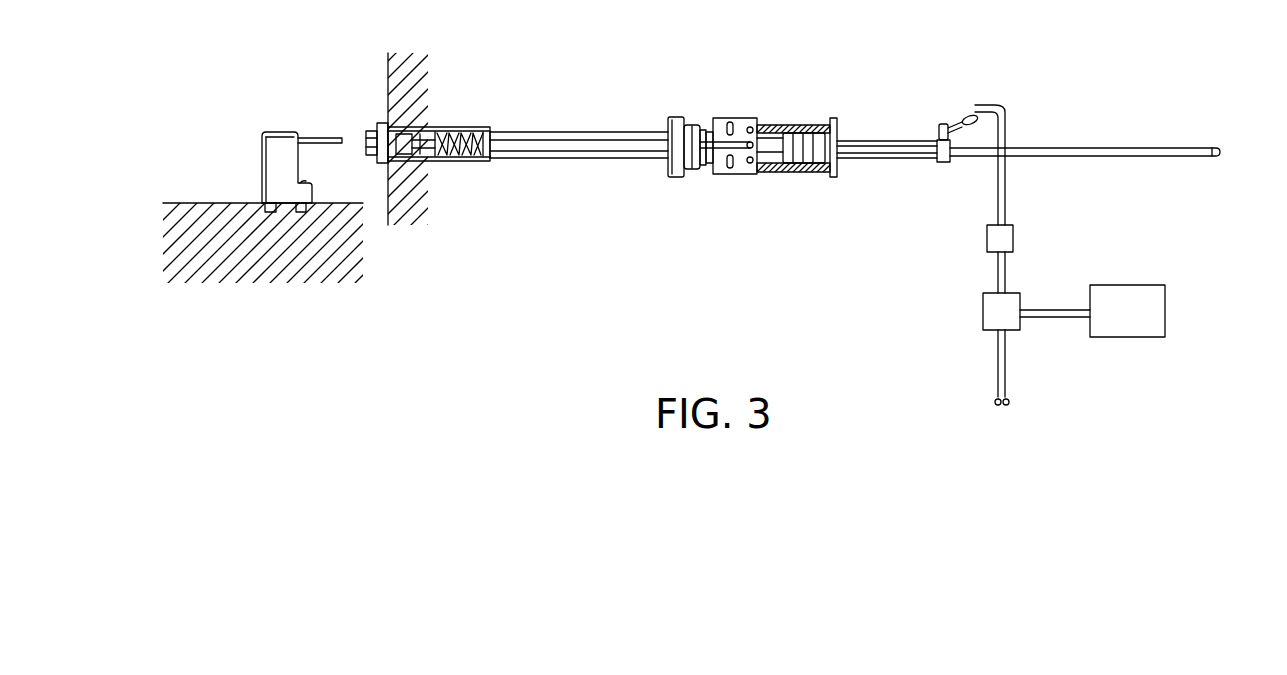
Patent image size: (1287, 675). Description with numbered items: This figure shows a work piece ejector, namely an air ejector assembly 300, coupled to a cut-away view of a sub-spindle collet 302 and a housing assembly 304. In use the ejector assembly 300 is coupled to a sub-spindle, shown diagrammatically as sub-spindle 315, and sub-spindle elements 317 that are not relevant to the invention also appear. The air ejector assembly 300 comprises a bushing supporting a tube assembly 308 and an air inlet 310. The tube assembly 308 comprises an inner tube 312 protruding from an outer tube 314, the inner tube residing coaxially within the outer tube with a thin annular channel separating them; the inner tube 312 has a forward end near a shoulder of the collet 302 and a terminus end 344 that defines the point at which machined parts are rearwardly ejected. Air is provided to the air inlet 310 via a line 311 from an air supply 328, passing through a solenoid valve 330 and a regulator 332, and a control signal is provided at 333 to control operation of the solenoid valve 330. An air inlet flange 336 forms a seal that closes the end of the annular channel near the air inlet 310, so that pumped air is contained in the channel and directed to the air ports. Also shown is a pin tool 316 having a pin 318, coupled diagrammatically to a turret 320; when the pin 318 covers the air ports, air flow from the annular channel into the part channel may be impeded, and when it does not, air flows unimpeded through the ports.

The air ejector assembly 300 is at (678, 214).
The sub-spindle collet 302 is at (378, 122).
The housing assembly 304 is at (532, 130).
The tube assembly 308 is at (918, 160).
The air inlet 310 is at (943, 123).
The line 311 is at (1008, 113).
The inner tube 312 is at (1025, 160).
The outer tube 314 is at (857, 140).
The sub-spindle 315 is at (387, 85).
The pin tool 316 is at (262, 155).
The sub-spindle elements 317 is at (728, 122).
The pin 318 is at (318, 137).
The turret 320 is at (236, 203).
The air supply 328 is at (1117, 338).
The solenoid valve 330 is at (983, 312).
The regulator 332 is at (987, 237).
The control signal 333 is at (998, 370).
The air inlet flange 336 is at (943, 163).
The terminus end 344 is at (1218, 160).